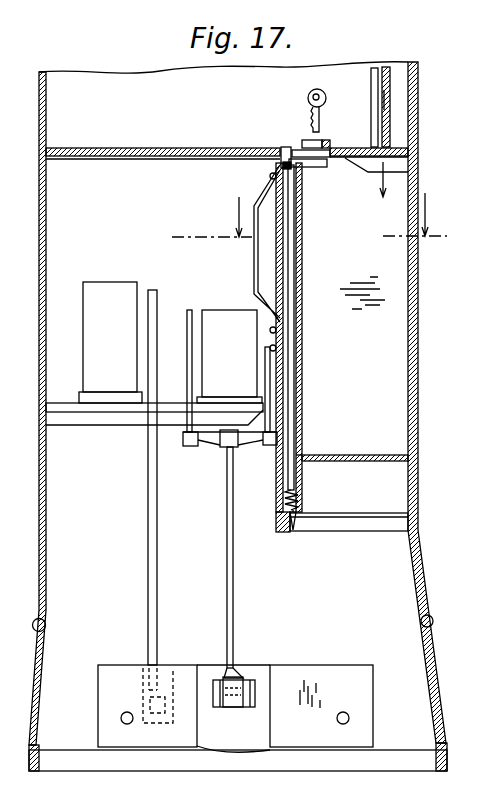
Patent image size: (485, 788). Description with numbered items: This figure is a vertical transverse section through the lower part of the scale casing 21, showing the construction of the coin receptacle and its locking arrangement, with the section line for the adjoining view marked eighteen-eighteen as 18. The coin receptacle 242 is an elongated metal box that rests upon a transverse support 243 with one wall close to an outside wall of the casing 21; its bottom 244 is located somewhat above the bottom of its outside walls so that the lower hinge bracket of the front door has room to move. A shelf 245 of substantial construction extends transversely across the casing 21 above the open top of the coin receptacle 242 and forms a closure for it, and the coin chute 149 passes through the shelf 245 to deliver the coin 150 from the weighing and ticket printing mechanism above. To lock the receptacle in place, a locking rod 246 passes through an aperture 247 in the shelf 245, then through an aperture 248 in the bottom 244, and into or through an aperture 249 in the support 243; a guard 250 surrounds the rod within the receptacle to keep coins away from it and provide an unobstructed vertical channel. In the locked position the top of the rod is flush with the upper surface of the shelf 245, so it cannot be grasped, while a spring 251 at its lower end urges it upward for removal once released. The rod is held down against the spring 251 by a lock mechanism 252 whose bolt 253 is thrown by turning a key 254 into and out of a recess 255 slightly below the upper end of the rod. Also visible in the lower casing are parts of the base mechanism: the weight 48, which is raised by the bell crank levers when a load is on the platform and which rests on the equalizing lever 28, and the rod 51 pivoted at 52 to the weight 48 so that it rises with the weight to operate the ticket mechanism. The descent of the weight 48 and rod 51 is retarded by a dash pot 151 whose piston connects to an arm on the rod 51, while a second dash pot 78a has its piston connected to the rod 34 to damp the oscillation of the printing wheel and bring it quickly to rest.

The casing 21 is at (420, 553).
The shelf 245 is at (165, 148).
The aperture 247 is at (280, 147).
The lock mechanism 252 is at (320, 141).
The bolt 253 is at (307, 166).
The key 254 is at (310, 97).
The recess 255 is at (292, 170).
The coin 150 is at (388, 99).
The coin chute 149 is at (393, 127).
The section line 18- 18 is at (315, 215).
The locking rod 246 is at (290, 258).
The guard 250 is at (301, 335).
The coin receptacle 242 is at (392, 322).
The bottom 244 is at (378, 455).
The aperture 248 is at (298, 461).
The spring 251 is at (299, 503).
The transverse support 243 is at (340, 520).
The aperture 249 is at (300, 517).
The dash pot 151 is at (94, 325).
The dash pot 78a is at (214, 318).
The rod 51 is at (148, 550).
The rod 34 is at (227, 588).
The pivot 52 is at (147, 697).
The equalizing lever 28 is at (253, 687).
The weight 48 is at (323, 675).